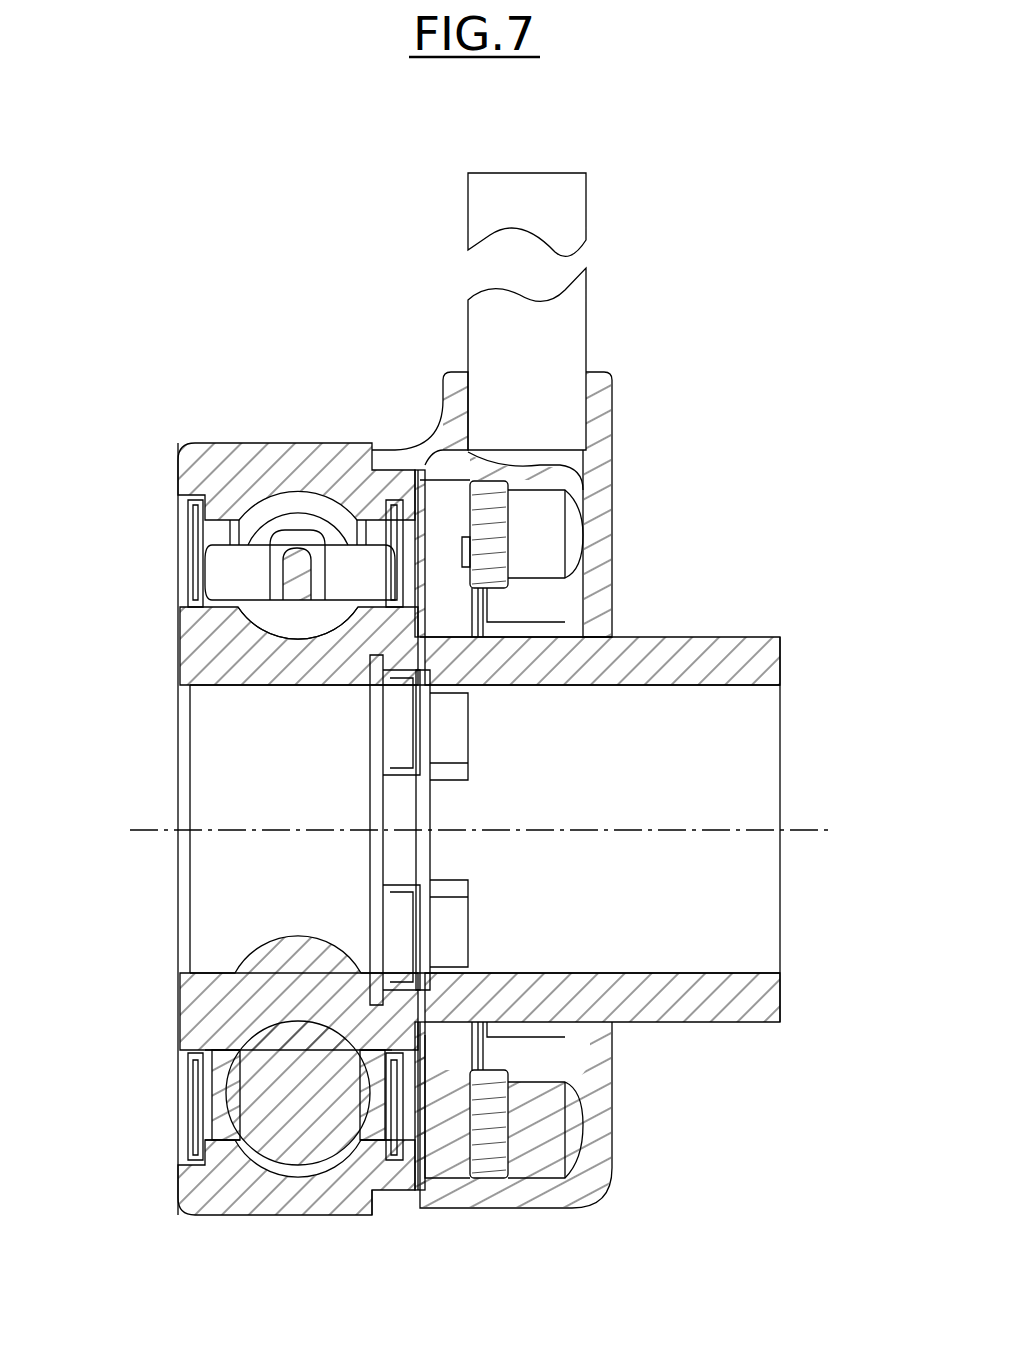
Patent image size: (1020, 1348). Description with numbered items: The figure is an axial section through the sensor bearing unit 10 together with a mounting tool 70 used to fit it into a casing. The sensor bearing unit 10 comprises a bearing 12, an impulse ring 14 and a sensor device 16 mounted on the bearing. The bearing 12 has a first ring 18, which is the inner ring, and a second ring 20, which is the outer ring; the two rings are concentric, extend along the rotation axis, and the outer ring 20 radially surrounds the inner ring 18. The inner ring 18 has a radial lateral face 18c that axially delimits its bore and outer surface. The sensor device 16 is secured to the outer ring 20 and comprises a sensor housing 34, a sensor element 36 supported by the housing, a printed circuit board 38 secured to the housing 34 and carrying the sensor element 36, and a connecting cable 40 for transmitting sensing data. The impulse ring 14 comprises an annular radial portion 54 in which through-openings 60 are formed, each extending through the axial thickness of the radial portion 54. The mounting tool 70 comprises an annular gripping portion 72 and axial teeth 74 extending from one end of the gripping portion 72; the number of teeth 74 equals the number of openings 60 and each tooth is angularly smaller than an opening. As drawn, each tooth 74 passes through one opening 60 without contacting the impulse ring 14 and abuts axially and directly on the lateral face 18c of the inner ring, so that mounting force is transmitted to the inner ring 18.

The sensor bearing unit 10 is at (318, 300).
The bearing 12 is at (135, 580).
The impulse ring 14 is at (434, 603).
The sensor device 16 is at (634, 432).
The first ring 18 is at (203, 665).
The radial lateral face 18c is at (620, 690).
The second ring 20 is at (222, 465).
The sensor housing 34 is at (615, 455).
The sensor element 36 is at (466, 555).
The printed circuit board 38 is at (497, 530).
The connecting cable 40 is at (555, 362).
The annular radial portion 54 is at (420, 1052).
The through-opening 60 is at (443, 650).
The mounting tool 70 is at (738, 632).
The annular gripping portion 72 is at (752, 998).
The axial tooth 74 is at (440, 1003).